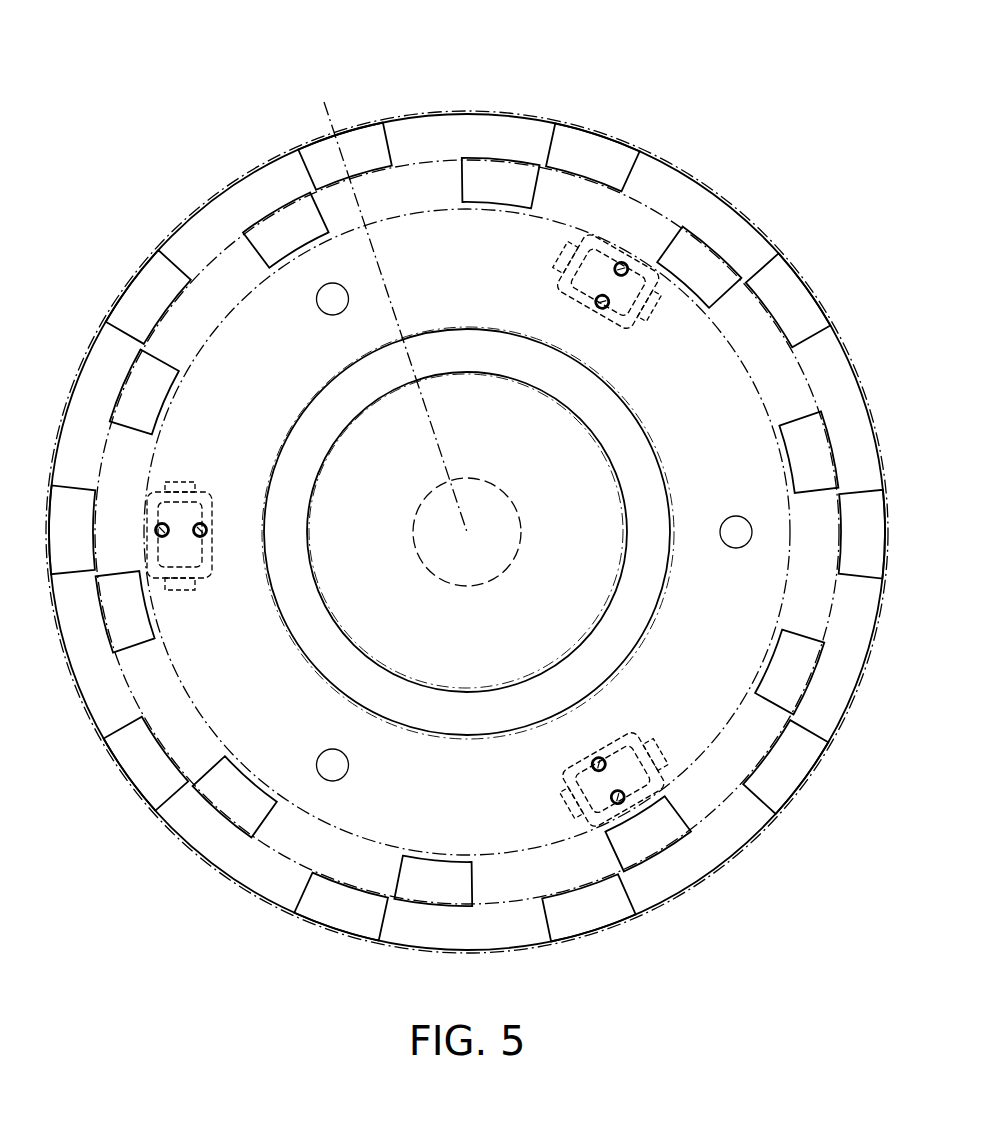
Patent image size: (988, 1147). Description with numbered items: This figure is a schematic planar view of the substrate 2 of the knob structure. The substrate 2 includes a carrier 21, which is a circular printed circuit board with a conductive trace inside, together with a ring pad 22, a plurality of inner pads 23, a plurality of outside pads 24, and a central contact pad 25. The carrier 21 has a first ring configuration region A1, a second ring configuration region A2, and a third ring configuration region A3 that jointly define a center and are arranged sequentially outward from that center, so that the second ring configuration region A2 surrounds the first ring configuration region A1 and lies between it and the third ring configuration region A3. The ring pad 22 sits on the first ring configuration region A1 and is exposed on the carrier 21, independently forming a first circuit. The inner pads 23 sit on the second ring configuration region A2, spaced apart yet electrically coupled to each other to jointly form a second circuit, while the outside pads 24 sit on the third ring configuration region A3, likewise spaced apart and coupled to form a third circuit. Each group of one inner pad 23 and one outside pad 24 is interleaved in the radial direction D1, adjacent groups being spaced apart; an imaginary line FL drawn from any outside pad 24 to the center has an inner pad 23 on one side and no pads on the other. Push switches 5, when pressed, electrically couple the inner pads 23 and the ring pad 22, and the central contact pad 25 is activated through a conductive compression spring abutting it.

The substrate 2 is at (220, 206).
The carrier 21 is at (445, 250).
The ring pad 22 is at (310, 622).
The inner pads 23 is at (498, 183).
The outside pads 24 is at (598, 165).
The central contact pad 25 is at (497, 540).
The push switches 5 is at (201, 494).
The imaginary line FL is at (332, 113).
The radial direction D1 is at (233, 33).
The first ring configuration region A1 is at (657, 620).
The second ring configuration region A2 is at (277, 852).
The third ring configuration region A3 is at (700, 880).